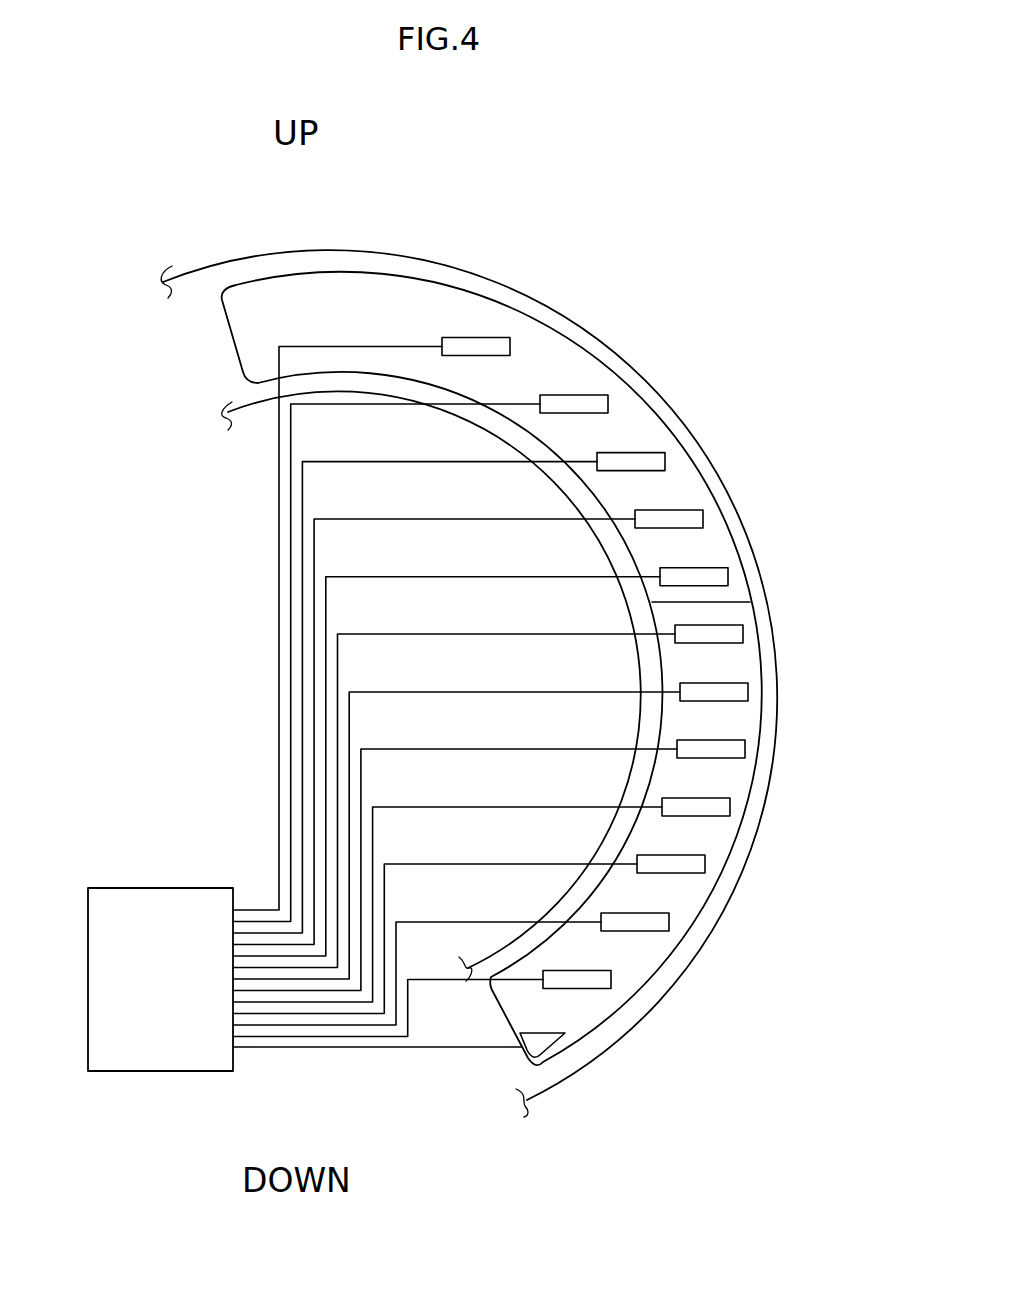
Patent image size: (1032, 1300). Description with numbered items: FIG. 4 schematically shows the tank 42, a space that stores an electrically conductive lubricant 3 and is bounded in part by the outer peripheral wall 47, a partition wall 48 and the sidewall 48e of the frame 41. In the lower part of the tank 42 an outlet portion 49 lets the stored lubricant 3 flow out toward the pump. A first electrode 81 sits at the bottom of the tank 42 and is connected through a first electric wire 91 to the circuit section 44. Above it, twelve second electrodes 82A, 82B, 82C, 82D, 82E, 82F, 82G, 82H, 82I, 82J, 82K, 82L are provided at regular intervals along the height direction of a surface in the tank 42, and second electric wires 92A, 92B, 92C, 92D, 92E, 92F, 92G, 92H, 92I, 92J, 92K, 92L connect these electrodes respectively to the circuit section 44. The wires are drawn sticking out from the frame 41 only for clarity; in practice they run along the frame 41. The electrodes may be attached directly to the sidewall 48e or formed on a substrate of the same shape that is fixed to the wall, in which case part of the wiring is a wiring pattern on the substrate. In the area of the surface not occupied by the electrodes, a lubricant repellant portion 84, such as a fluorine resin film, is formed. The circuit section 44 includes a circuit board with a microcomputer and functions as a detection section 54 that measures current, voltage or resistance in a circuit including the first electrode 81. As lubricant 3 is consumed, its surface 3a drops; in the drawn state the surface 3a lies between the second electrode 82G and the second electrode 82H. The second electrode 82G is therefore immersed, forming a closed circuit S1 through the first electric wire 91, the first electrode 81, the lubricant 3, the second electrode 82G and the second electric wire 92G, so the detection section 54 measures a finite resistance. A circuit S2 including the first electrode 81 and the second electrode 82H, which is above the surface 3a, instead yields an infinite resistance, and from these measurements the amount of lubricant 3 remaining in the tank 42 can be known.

The frame 41 is at (339, 245).
The tank 42 is at (546, 668).
The sidewall 48e is at (577, 367).
The lubricant repellant portion 84 is at (681, 492).
The outer peripheral wall 47 is at (731, 906).
The inner groove 48 is at (533, 938).
The lubricant 3 is at (688, 663).
The surface of the lubricant 3a is at (687, 602).
The circuit section 44 is at (150, 935).
The detection section 54 is at (176, 999).
The first electric wire 91 is at (380, 1048).
The first electrode 81 is at (550, 1042).
The outlet portion 49 is at (517, 1048).
The closed circuit S1 is at (355, 628).
The circuit S2 is at (355, 570).
The second electric wire 92A is at (427, 979).
The second electric wire 92B is at (425, 922).
The second electric wire 92C is at (425, 864).
The second electric wire 92D is at (425, 807).
The second electric wire 92E is at (425, 749).
The second electric wire 92F is at (425, 692).
The second electric wire 92G is at (425, 634).
The second electric wire 92H is at (425, 577).
The second electric wire 92I is at (425, 519).
The second electric wire 92J is at (403, 461).
The second electric wire 92K is at (530, 404).
The second electric wire 92L is at (363, 346).
The second electrode 82A is at (612, 980).
The second electrode 82B is at (671, 921).
The second electrode 82C is at (706, 864).
The second electrode 82D is at (731, 807).
The second electrode 82E is at (746, 748).
The second electrode 82F is at (749, 690).
The second electrode 82G is at (744, 632).
The second electrode 82H is at (731, 575).
The second electrode 82I is at (706, 518).
The second electrode 82J is at (668, 462).
The second electrode 82K is at (609, 400).
The second electrode 82L is at (492, 337).